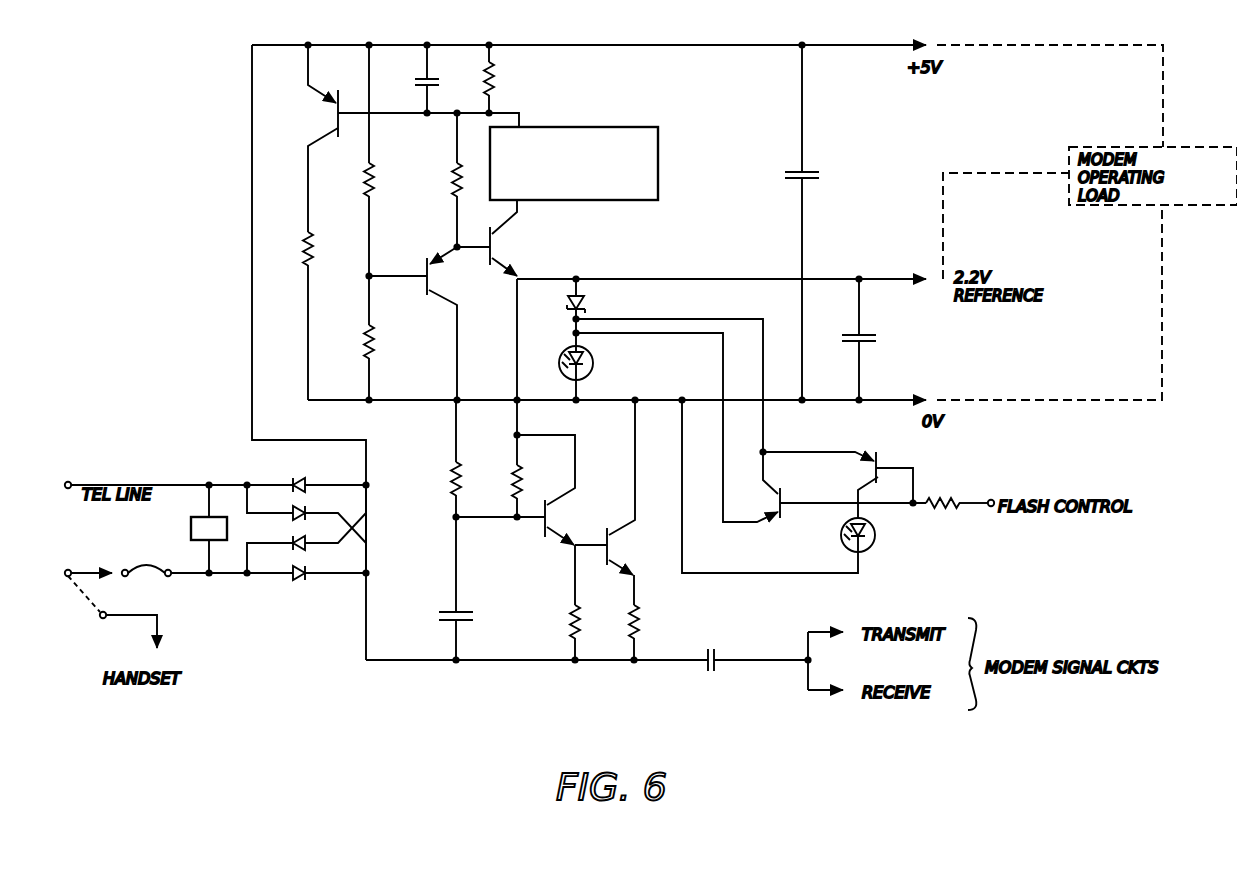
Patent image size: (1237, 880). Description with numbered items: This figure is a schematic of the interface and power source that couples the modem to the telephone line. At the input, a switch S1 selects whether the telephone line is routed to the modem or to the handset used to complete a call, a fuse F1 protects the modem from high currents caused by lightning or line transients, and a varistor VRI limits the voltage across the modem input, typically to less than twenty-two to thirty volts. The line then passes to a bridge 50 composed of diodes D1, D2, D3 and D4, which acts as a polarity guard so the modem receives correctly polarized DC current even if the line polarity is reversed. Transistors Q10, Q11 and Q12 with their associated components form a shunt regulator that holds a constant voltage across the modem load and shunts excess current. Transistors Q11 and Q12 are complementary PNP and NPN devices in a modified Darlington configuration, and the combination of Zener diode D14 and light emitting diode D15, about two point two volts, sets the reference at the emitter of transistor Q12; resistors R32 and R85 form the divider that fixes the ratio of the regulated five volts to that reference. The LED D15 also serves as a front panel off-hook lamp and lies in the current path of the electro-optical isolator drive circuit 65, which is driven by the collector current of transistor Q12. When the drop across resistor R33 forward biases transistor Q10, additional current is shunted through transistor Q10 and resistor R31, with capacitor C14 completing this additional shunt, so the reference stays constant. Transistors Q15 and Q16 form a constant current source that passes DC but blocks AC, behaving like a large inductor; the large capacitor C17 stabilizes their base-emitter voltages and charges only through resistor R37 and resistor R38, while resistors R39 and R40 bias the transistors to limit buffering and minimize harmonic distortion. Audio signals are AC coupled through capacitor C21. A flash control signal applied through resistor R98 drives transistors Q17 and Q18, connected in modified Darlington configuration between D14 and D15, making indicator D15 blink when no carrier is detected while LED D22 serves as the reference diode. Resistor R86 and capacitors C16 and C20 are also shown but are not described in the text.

The electro-optical isolator drive circuit 65 is at (658, 155).
The bridge 50 is at (306, 546).
The transistor Q10 is at (398, 138).
The transistor Q11 is at (422, 323).
The transistor Q12 is at (501, 300).
The transistor Q15 is at (531, 520).
The transistor Q16 is at (631, 502).
The transistor Q17 is at (838, 482).
The transistor Q18 is at (824, 503).
The resistor R31 is at (287, 316).
The resistor R32 is at (348, 185).
The resistor R33 is at (507, 79).
The resistor R37 is at (432, 506).
The resistor R38 is at (531, 458).
The resistor R39 is at (555, 632).
The resistor R40 is at (652, 632).
The resistor R85 is at (387, 362).
The resistor R86 is at (436, 180).
The resistor R98 is at (960, 493).
The capacitor C14 is at (441, 79).
The capacitor C16 is at (877, 339).
The capacitor C17 is at (472, 625).
The capacitor C20 is at (819, 222).
The capacitor C21 is at (751, 675).
The diode D1 is at (329, 567).
The diode D2 is at (306, 543).
The diode D3 is at (306, 514).
The diode D4 is at (329, 478).
The Zener diode D14 is at (672, 386).
The light emitting diode D15 is at (651, 427).
The LED D22 is at (797, 486).
The varistor VRI is at (209, 529).
The switch S1 is at (88, 583).
The fuse F1 is at (207, 582).